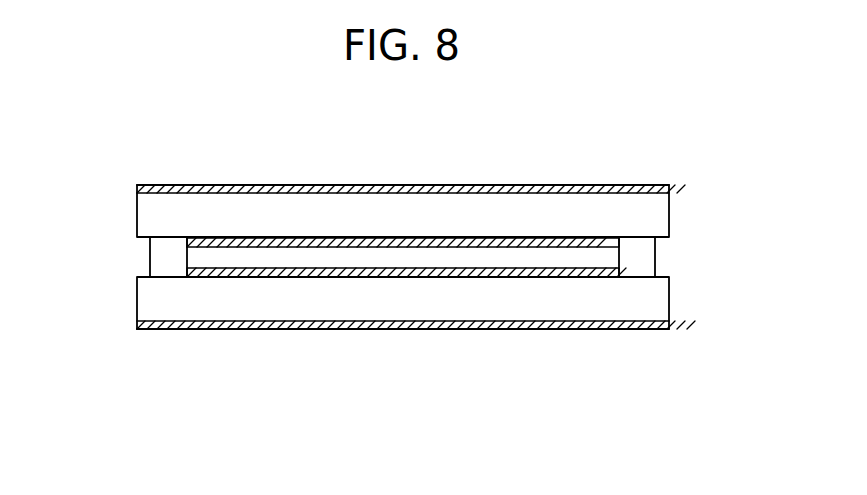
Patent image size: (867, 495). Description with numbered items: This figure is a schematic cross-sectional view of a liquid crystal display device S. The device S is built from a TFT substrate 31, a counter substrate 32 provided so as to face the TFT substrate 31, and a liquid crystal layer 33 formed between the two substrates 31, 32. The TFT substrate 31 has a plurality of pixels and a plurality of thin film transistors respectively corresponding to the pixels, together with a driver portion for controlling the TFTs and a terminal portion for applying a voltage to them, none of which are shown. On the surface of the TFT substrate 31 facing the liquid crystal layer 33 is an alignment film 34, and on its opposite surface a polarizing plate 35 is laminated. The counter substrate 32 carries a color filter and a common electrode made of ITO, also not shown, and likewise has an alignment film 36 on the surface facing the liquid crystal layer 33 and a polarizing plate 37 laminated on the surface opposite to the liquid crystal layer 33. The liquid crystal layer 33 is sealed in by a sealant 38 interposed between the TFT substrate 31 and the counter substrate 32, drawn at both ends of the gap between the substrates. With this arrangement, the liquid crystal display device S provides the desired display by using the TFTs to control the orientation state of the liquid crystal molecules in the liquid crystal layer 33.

The liquid crystal display device S is at (187, 149).
The TFT substrate 31 is at (660, 302).
The counter substrate 32 is at (660, 214).
The liquid crystal layer 33 is at (534, 262).
The alignment film 34 is at (270, 278).
The polarizing plate 35 is at (397, 330).
The alignment film 36 is at (317, 238).
The polarizing plate 37 is at (393, 187).
The sealant 38 is at (160, 257).